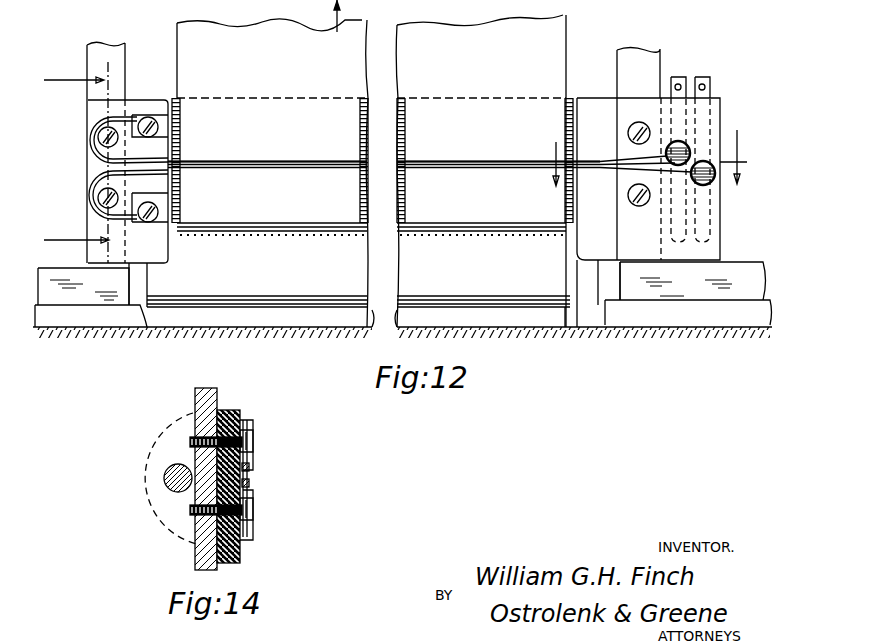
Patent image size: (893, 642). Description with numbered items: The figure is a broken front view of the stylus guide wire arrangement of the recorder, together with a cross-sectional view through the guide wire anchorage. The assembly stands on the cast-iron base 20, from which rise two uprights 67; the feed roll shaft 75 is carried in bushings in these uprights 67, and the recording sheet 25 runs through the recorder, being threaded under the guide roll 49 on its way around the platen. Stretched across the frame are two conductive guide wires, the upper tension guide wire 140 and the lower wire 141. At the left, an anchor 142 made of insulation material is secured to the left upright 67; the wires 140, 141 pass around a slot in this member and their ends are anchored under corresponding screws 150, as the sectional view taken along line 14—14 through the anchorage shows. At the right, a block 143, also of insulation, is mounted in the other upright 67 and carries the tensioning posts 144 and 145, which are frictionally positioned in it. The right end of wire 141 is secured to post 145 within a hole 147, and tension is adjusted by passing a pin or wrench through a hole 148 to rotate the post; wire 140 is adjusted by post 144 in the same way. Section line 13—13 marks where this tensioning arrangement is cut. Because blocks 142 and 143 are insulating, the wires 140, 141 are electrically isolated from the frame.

In FIG. 12, the section line 13— 13 is at (641, 170).
In FIG. 12, the section line 14— 14 is at (76, 160).
In FIG. 12, the cast-iron base 20 is at (67, 320).
In FIG. 12, the recording sheet 25 is at (228, 38).
In FIG. 12, the guide roll 49 is at (390, 303).
In FIG. 12, the uprights 67 is at (100, 52).
In FIG. 14, the uprights 67 is at (217, 388).
In FIG. 14, the shaft 75 is at (165, 485).
In FIG. 12, the tension guide wire 140 is at (237, 160).
In FIG. 14, the tension guide wire 140 is at (250, 470).
In FIG. 12, the lower wire 141 is at (232, 170).
In FIG. 14, the lower wire 141 is at (248, 487).
In FIG. 12, the anchor 142 is at (138, 104).
In FIG. 14, the anchor 142 is at (232, 410).
In FIG. 12, the block 143 is at (585, 105).
In FIG. 12, the tensioning post 144 is at (676, 76).
In FIG. 12, the tensioning post 145 is at (702, 77).
In FIG. 12, the hole 147 is at (703, 165).
In FIG. 12, the hole 148 is at (706, 86).
In FIG. 12, the screws 150 is at (158, 118).
In FIG. 14, the screws 150 is at (253, 424).